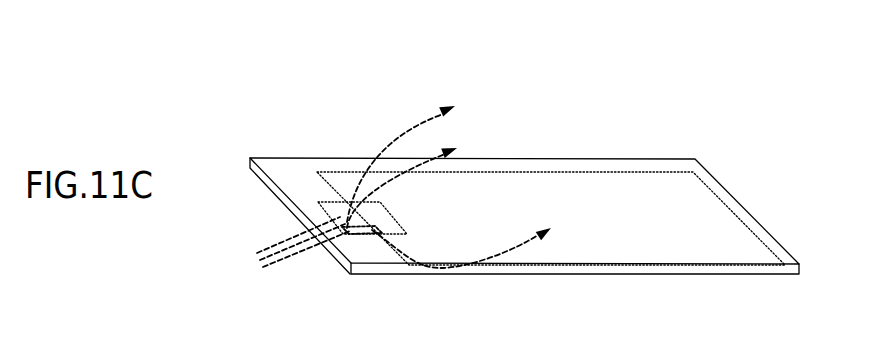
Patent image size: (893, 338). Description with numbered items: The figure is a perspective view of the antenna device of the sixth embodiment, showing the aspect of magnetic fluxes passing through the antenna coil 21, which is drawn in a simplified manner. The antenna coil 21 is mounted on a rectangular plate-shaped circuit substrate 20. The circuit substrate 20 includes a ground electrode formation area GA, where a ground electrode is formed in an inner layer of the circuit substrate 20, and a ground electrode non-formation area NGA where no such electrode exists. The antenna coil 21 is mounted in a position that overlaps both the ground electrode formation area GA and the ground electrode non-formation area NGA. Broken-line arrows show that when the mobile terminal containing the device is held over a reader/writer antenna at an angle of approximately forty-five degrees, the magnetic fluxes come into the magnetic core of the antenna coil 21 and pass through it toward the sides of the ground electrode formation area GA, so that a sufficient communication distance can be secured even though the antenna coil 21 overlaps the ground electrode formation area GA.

The circuit substrate 20 is at (697, 158).
The antenna coil 21 is at (378, 258).
The ground electrode formation area GA is at (594, 178).
The ground electrode non-formation area NGA is at (301, 176).